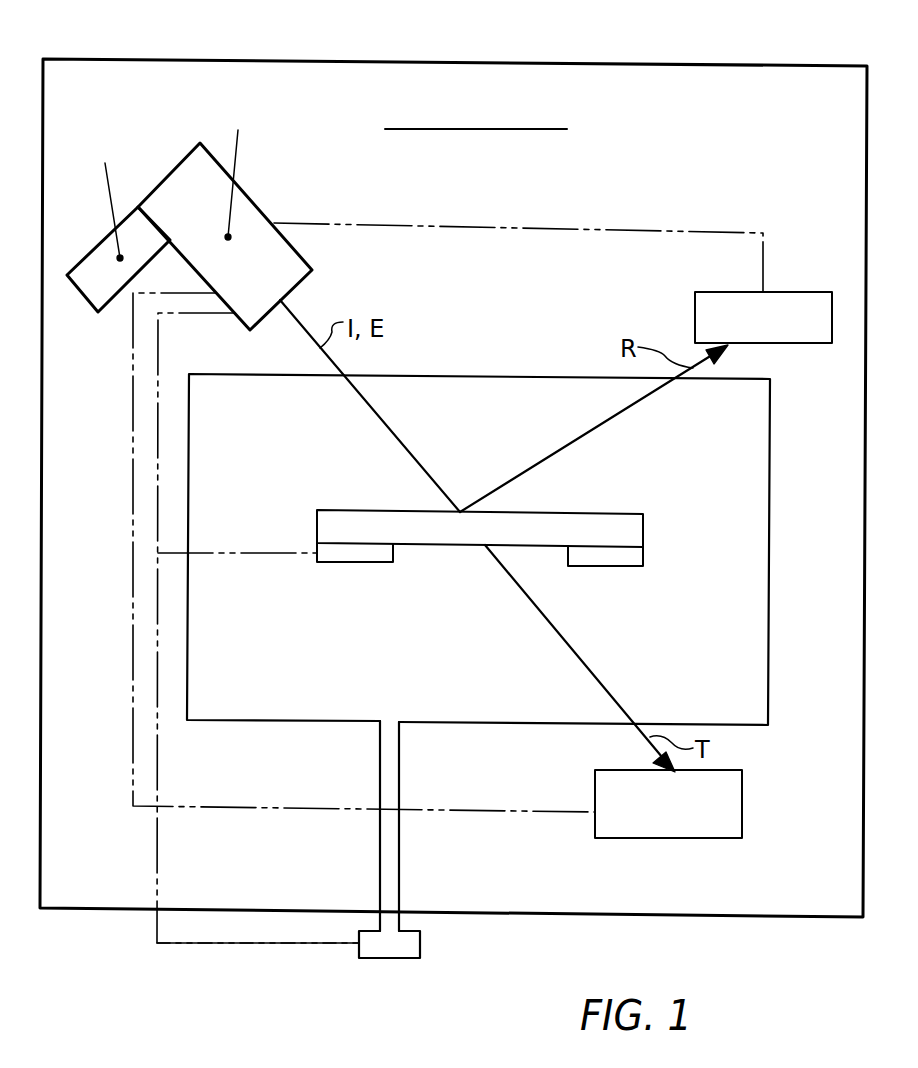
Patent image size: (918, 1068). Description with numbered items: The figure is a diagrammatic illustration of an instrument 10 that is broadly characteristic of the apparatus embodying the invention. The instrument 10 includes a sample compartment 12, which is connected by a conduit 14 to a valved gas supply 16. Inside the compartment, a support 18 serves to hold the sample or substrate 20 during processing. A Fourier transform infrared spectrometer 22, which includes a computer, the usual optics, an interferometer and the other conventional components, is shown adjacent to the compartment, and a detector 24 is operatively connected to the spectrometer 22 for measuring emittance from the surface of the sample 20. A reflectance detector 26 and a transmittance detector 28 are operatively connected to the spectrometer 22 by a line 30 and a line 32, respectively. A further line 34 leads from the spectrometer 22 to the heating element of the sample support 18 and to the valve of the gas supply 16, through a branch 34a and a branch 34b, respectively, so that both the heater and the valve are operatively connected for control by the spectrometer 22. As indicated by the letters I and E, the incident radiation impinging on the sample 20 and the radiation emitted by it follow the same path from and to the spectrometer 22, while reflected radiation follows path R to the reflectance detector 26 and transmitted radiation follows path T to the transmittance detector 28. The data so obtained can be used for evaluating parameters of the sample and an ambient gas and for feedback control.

The instrument 10 is at (692, 58).
The sample compartment 12 is at (770, 572).
The conduit 14 is at (400, 863).
The valved gas supply 16 is at (403, 948).
The support 18 is at (372, 552).
The sample 20 is at (627, 533).
The Fourier transform infrared spectrometer 22 is at (257, 225).
The detector 24 is at (98, 303).
The reflectance detector 26 is at (695, 315).
The transmittance detector 28 is at (742, 823).
The line 30 is at (505, 231).
The line 32 is at (288, 808).
The line 34 is at (158, 367).
The branch 34a is at (265, 553).
The branch 34b is at (250, 943).